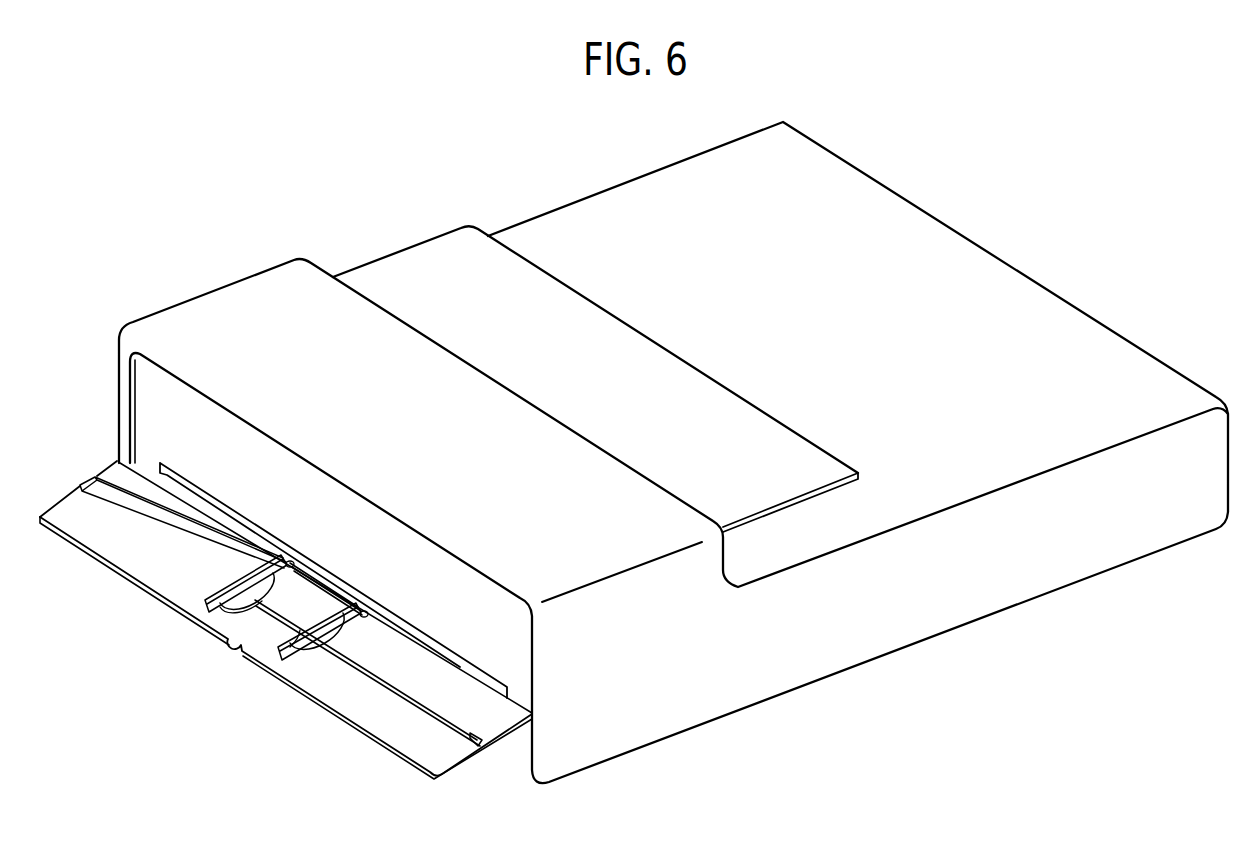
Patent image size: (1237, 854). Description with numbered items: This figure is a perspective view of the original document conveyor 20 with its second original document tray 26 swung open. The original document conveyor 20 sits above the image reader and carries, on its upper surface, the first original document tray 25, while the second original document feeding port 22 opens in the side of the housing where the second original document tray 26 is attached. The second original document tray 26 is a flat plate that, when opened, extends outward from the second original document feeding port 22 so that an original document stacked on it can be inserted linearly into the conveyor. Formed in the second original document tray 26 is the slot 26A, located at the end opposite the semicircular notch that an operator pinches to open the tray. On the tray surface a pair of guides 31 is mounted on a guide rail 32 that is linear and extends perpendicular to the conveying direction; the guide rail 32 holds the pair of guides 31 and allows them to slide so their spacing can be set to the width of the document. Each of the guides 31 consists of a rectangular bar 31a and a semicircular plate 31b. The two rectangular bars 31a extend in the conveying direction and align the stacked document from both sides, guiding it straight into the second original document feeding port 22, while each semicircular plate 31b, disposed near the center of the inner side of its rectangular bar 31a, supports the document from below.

The original document conveyor 20 is at (715, 560).
The second original document feeding port 22 is at (465, 662).
The first original document tray 25 is at (648, 346).
The second original document tray 26 is at (115, 555).
The slot 26A is at (318, 585).
The pair of guides 31 is at (286, 674).
The rectangular bar 31a is at (332, 625).
The semicircular plate 31b is at (303, 625).
The guide rail 32 is at (467, 740).